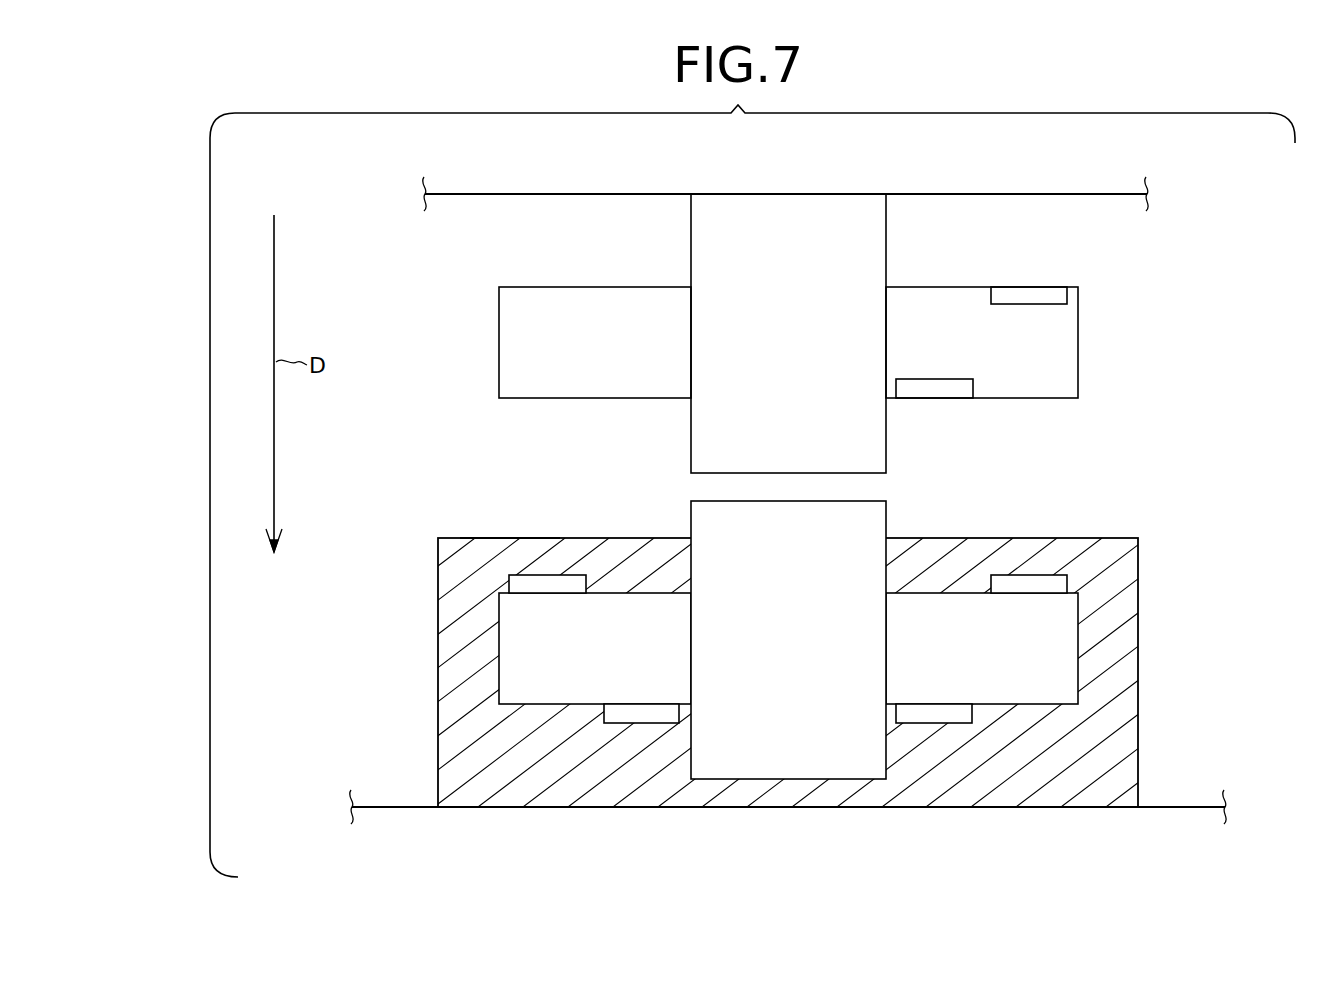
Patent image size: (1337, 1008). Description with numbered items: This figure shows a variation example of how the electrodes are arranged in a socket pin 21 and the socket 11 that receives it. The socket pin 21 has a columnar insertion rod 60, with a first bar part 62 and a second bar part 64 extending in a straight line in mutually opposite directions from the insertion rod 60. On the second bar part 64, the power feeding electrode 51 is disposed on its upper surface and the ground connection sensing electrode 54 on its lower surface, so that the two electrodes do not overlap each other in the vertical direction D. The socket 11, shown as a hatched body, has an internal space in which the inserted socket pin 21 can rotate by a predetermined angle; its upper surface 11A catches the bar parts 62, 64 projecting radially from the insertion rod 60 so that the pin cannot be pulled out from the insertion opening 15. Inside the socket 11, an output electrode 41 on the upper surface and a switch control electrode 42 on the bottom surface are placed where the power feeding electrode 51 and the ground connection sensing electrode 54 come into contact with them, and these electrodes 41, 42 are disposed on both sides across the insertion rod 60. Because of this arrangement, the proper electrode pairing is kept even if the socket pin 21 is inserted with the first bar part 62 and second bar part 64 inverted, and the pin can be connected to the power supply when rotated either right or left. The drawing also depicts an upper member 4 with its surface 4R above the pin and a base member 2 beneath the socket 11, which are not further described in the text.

The base plate 2 is at (1198, 843).
The upper plate 4 is at (1127, 147).
The lower surface of upper plate 4R is at (1083, 200).
The socket 11 is at (1198, 624).
The upper surface 11A is at (507, 537).
The insertion opening 15 is at (886, 566).
The socket pin 21 is at (1122, 425).
The output electrode 41 is at (547, 585).
The switch control electrode 42 is at (640, 712).
The power feeding electrode 51 is at (1028, 296).
The ground connection sensing electrode 54 is at (933, 390).
The insertion rod 60 is at (820, 205).
The first bar part 62 is at (517, 357).
The second bar part 64 is at (1060, 346).